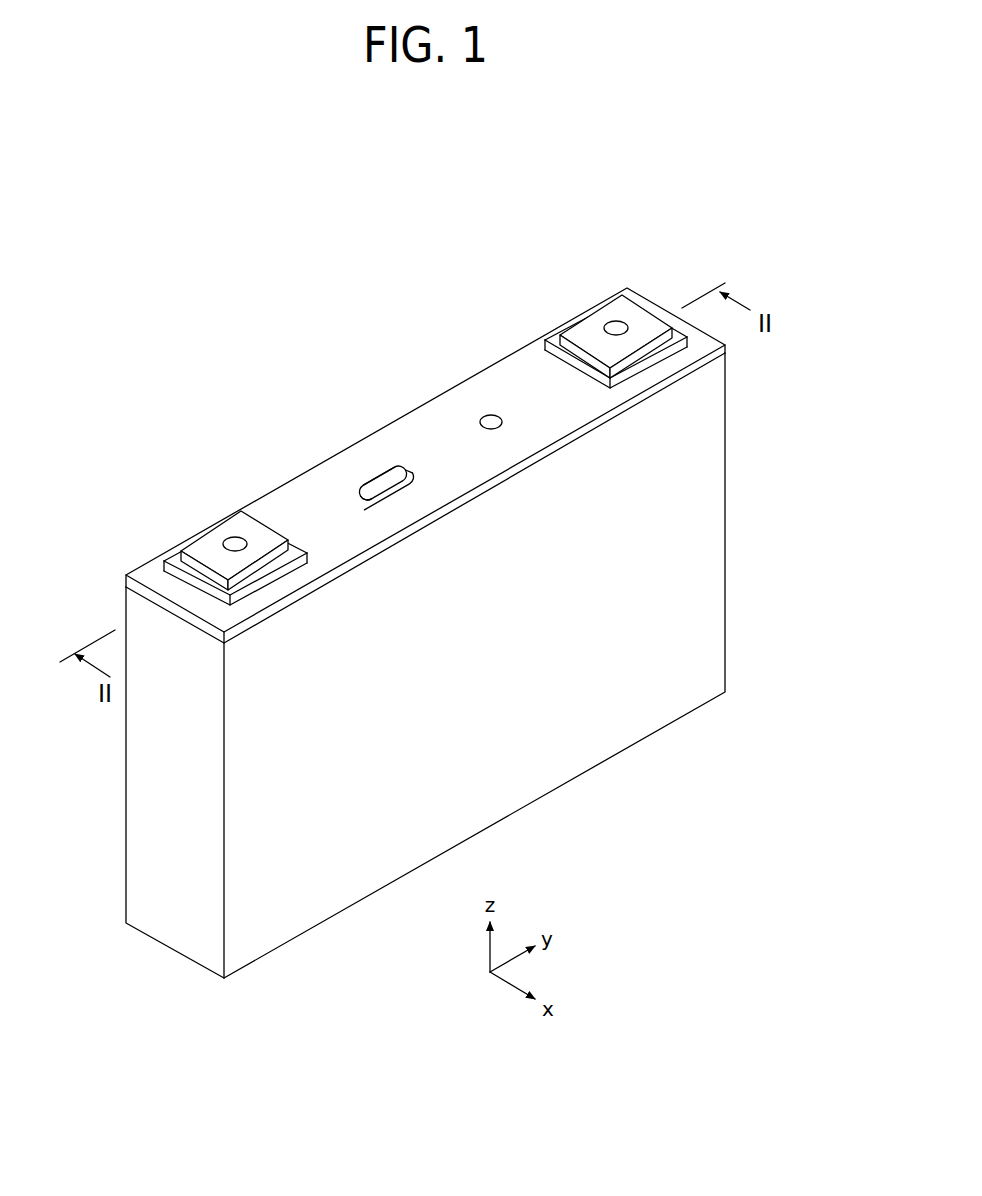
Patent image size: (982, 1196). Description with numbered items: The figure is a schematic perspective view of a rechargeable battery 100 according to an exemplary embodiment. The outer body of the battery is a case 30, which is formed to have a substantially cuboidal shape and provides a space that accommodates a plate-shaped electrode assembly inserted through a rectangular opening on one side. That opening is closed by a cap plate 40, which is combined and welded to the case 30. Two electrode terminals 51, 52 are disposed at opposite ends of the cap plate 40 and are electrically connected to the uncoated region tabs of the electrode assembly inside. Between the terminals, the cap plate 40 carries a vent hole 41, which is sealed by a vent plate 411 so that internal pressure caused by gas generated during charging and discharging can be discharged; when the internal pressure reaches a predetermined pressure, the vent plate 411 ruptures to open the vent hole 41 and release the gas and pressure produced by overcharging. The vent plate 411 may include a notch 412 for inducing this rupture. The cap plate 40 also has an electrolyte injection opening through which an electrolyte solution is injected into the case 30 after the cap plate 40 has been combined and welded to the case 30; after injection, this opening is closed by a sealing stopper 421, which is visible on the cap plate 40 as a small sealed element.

The rechargeable battery 100 is at (324, 336).
The case 30 is at (733, 565).
The cap plate 40 is at (430, 433).
The vent hole 41 is at (359, 487).
The vent plate 411 is at (365, 481).
The notch 412 is at (383, 477).
The sealing stopper 421 is at (490, 416).
The electrode terminal 51 is at (213, 526).
The electrode terminal 52 is at (595, 302).